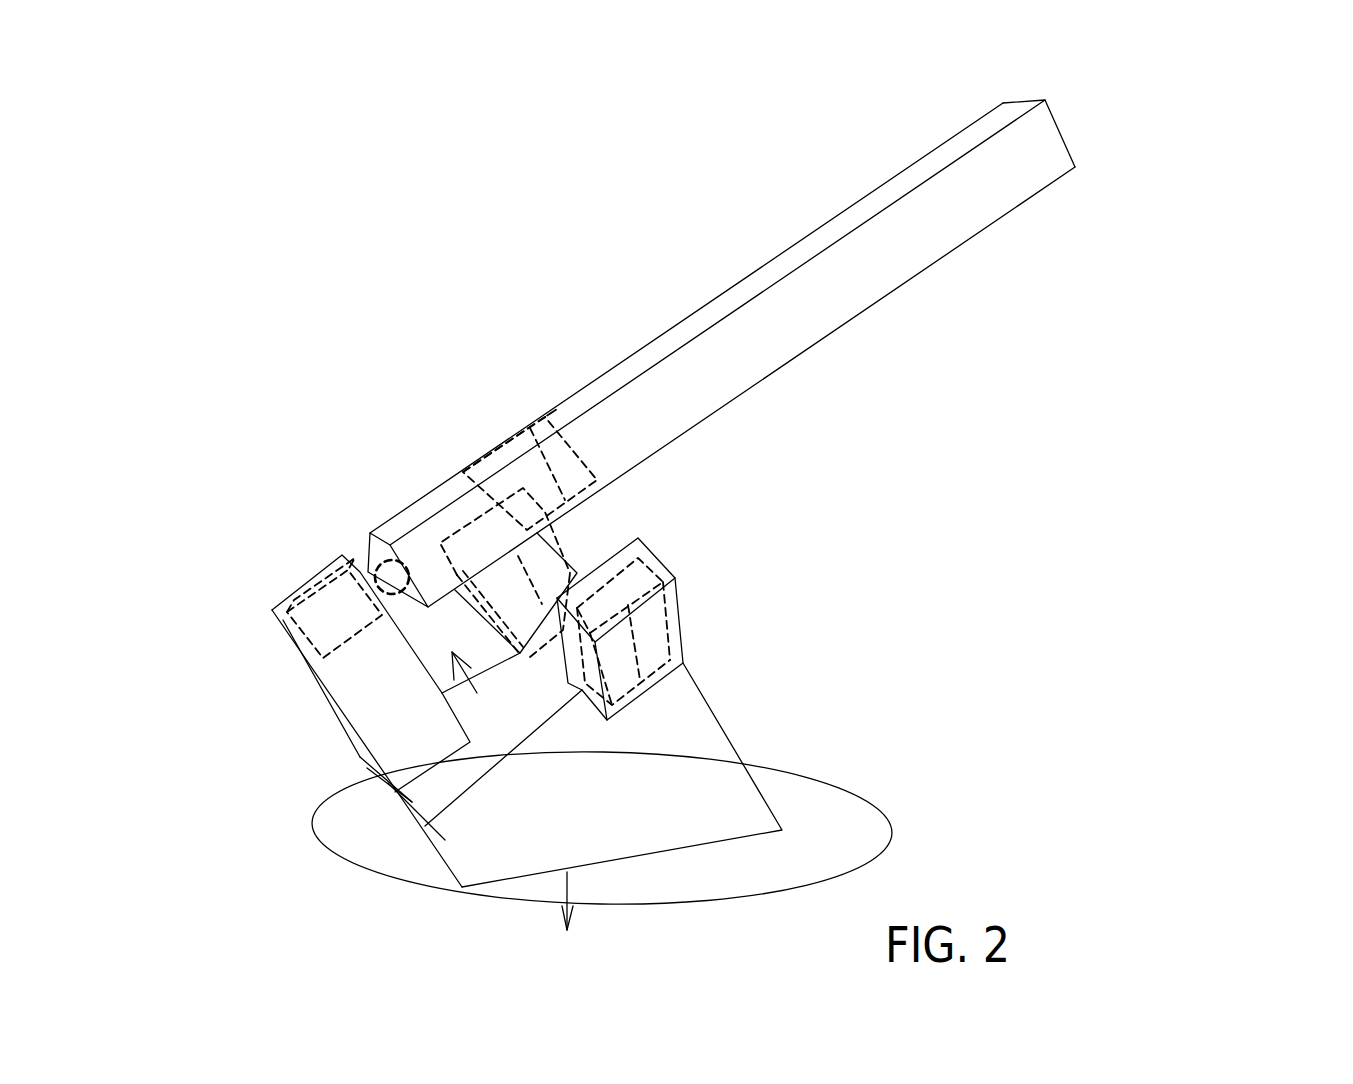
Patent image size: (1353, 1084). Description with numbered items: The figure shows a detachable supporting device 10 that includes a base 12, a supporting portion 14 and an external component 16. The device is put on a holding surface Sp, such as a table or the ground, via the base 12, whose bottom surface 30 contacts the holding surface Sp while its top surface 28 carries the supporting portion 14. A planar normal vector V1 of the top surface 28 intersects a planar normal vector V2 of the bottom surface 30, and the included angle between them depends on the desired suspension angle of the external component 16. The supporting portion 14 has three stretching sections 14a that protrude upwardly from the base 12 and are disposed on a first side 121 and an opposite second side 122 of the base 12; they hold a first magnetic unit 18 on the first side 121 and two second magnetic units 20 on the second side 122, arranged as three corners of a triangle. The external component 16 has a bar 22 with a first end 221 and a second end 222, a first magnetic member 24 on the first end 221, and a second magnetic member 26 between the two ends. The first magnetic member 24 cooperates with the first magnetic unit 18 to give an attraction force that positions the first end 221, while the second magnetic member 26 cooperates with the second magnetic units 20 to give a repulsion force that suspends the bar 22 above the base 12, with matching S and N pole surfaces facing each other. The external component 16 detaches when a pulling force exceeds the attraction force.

The detachable supporting device 10 is at (1176, 133).
The base 12 is at (710, 767).
The first side 121 is at (412, 802).
The second side 122 is at (710, 702).
The supporting portion 14 is at (168, 695).
The stretching section 14a is at (345, 675).
The external component 16 is at (808, 290).
The first magnetic unit 18 is at (332, 620).
The second magnetic unit 20 is at (547, 547).
The bar 22 is at (872, 285).
The first end 221 is at (385, 520).
The second end 222 is at (1068, 127).
The first magnetic member 24 is at (410, 563).
The second magnetic member 26 is at (572, 460).
The top surface 28 is at (532, 717).
The bottom surface 30 is at (683, 850).
The holding surface Sp is at (850, 846).
The planar normal vector of the top surface V1 is at (469, 659).
The planar normal vector of the bottom surface V2 is at (586, 915).